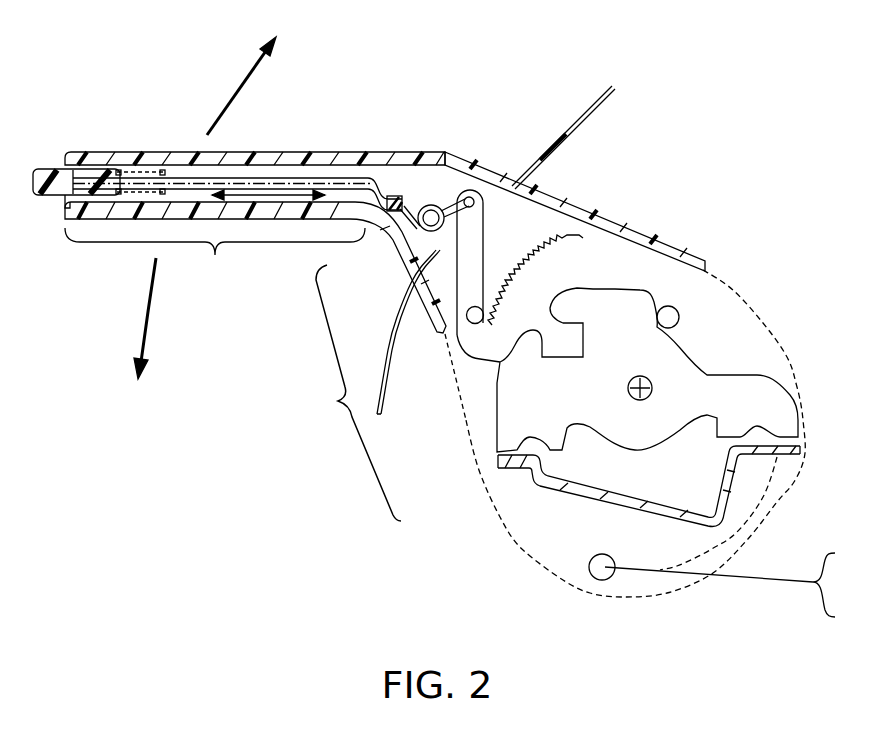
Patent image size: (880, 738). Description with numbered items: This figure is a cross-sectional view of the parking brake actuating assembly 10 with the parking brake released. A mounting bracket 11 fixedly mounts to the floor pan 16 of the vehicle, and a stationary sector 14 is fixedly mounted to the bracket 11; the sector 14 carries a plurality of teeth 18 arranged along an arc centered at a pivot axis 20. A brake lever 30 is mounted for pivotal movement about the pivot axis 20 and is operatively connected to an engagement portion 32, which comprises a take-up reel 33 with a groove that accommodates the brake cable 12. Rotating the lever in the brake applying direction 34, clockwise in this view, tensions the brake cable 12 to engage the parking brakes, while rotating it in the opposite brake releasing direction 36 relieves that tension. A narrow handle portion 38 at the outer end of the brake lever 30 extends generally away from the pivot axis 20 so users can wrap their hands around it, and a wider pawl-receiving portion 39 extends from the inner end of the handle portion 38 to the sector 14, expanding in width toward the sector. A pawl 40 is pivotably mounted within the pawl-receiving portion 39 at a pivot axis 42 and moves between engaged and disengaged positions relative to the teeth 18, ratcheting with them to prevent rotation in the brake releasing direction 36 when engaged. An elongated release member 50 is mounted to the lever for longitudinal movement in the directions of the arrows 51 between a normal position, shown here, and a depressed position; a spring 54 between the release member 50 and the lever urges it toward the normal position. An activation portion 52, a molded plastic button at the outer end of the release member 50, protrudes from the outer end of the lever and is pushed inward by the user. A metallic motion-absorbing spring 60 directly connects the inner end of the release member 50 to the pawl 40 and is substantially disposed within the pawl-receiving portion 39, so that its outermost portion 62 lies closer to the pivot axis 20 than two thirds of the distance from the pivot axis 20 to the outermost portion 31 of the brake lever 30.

The parking brake actuating assembly 10 is at (288, 548).
The mounting bracket 11 is at (778, 392).
The brake cable 12 is at (777, 582).
The stationary sector 14 is at (585, 265).
The floor pan 16 is at (780, 455).
The teeth 18 is at (560, 241).
The pivot axis 20 is at (633, 378).
The brake lever 30 is at (685, 280).
The outermost portion of the brake lever 31 is at (66, 204).
The engagement portion 32 is at (598, 574).
The take-up reel 33 is at (737, 535).
The brake applying direction 34 is at (248, 69).
The brake releasing direction 36 is at (143, 325).
The narrow handle portion 38 is at (255, 267).
The pawl-receiving portion 39 is at (353, 393).
The pawl 40 is at (468, 272).
The pivot axis of the pawl 42 is at (473, 323).
The elongated release member 50 is at (307, 178).
The arrows 51 is at (262, 195).
The activation portion 52 is at (57, 170).
The spring 54 is at (150, 172).
The motion-absorbing spring 60 is at (431, 206).
The outermost portion of the motion-absorbing spring 62 is at (392, 200).